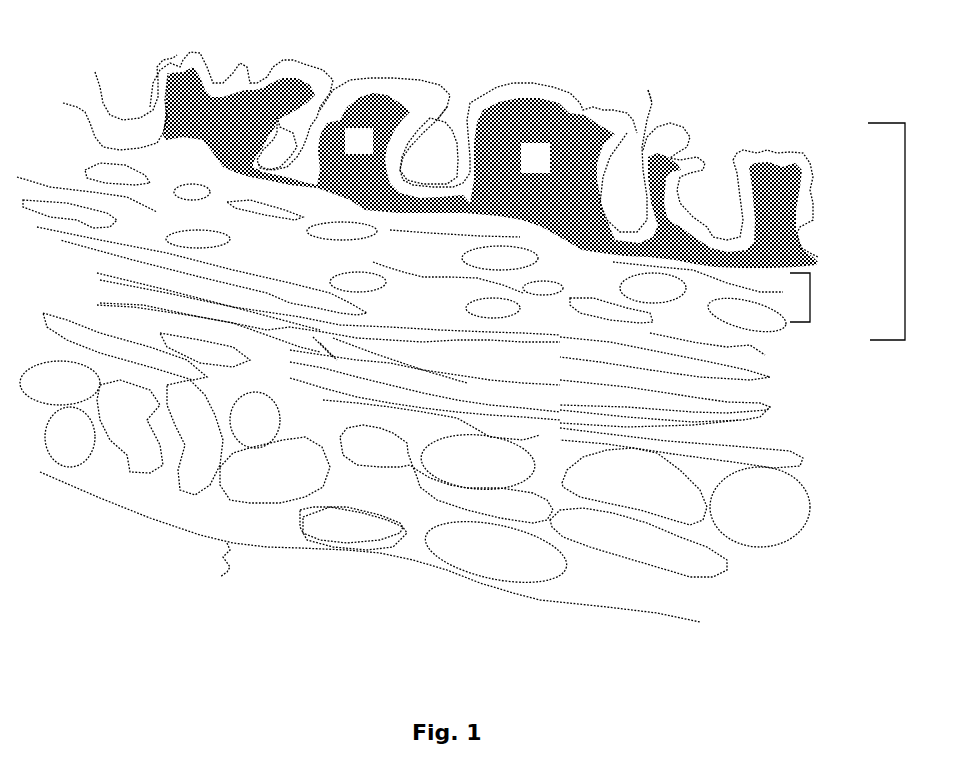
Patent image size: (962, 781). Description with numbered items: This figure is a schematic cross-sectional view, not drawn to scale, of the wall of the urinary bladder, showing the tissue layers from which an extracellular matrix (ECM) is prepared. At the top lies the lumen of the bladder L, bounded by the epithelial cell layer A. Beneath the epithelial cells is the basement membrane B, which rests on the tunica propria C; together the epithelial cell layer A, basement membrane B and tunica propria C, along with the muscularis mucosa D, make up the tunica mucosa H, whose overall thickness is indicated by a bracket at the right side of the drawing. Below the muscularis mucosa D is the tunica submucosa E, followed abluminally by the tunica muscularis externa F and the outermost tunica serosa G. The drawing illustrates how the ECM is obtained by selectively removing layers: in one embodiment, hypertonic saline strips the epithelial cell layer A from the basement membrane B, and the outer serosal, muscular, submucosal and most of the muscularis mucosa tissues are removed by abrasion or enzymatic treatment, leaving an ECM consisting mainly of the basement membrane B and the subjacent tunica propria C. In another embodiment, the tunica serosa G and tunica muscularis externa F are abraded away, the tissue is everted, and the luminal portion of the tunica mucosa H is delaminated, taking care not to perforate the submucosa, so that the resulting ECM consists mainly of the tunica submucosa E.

The lumen of the bladder L is at (137, 101).
The epithelial cell layer A is at (139, 139).
The basement membrane B is at (544, 109).
The tunica propria C is at (366, 151).
The muscularis mucosa D is at (810, 297).
The tunica submucosa E is at (403, 252).
The tunica muscularis externa F is at (437, 451).
The tunica serosa G is at (139, 329).
The tunica mucosa H is at (900, 231).